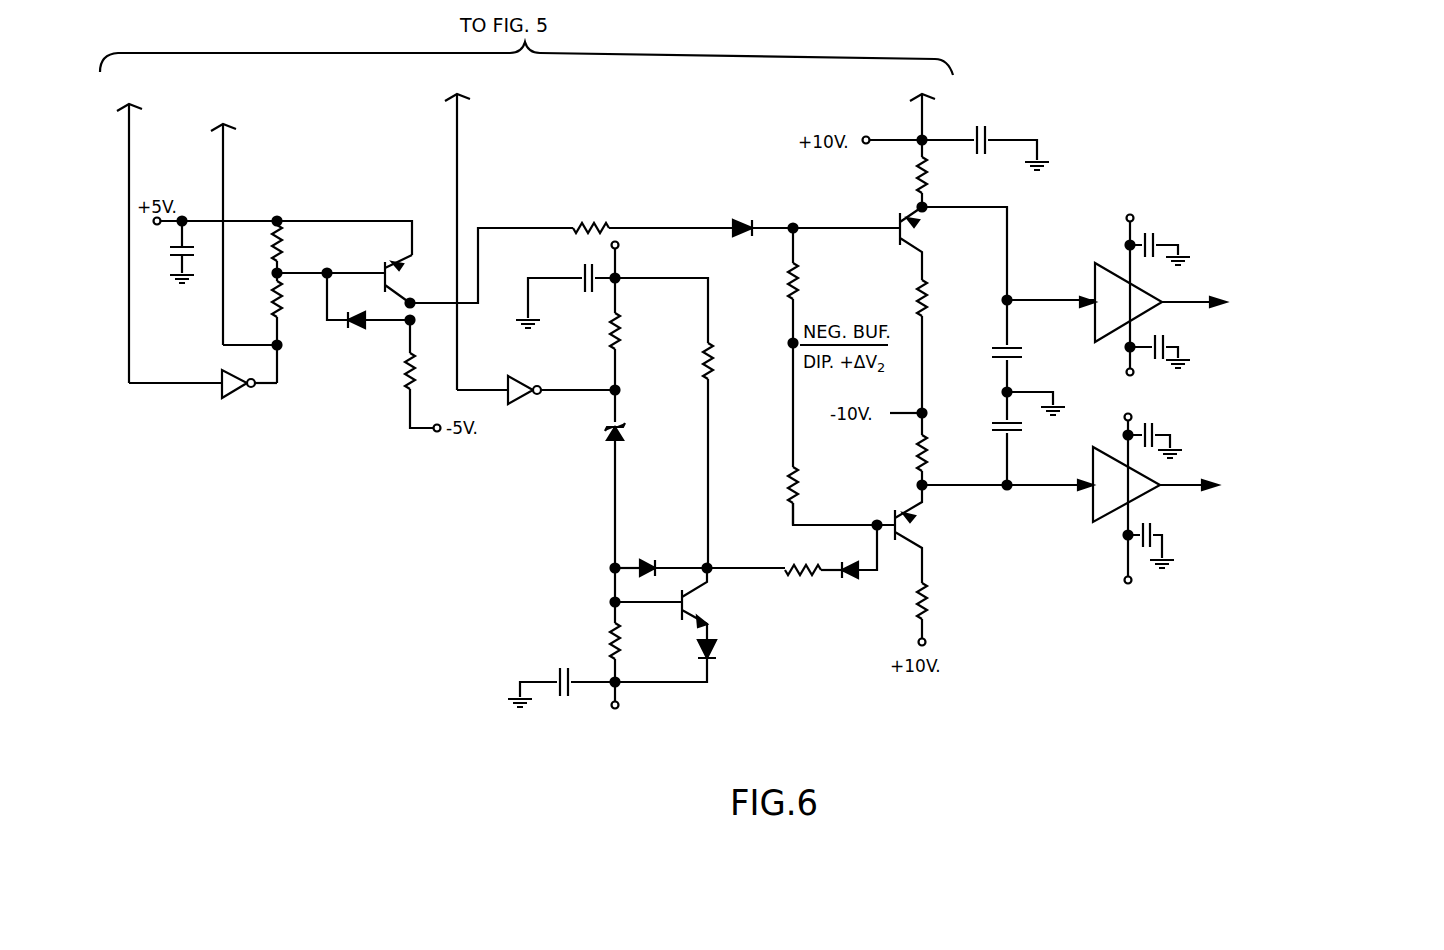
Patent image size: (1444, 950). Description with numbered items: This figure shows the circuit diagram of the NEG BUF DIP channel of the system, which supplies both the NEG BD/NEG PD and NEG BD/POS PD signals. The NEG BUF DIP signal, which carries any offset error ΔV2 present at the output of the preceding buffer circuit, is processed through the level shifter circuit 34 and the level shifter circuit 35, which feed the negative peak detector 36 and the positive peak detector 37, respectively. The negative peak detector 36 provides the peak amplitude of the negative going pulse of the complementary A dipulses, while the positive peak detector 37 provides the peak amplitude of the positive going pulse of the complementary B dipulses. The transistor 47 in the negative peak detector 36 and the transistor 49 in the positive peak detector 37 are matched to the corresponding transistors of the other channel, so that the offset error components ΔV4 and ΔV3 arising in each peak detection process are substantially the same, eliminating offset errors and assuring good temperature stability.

The level shifter circuit 34 is at (536, 373).
The level shifter circuit 35 is at (701, 618).
The negative peak detector 36 is at (1247, 266).
The positive peak detector 37 is at (1207, 540).
The transistor 47 is at (915, 232).
The transistor 49 is at (912, 527).